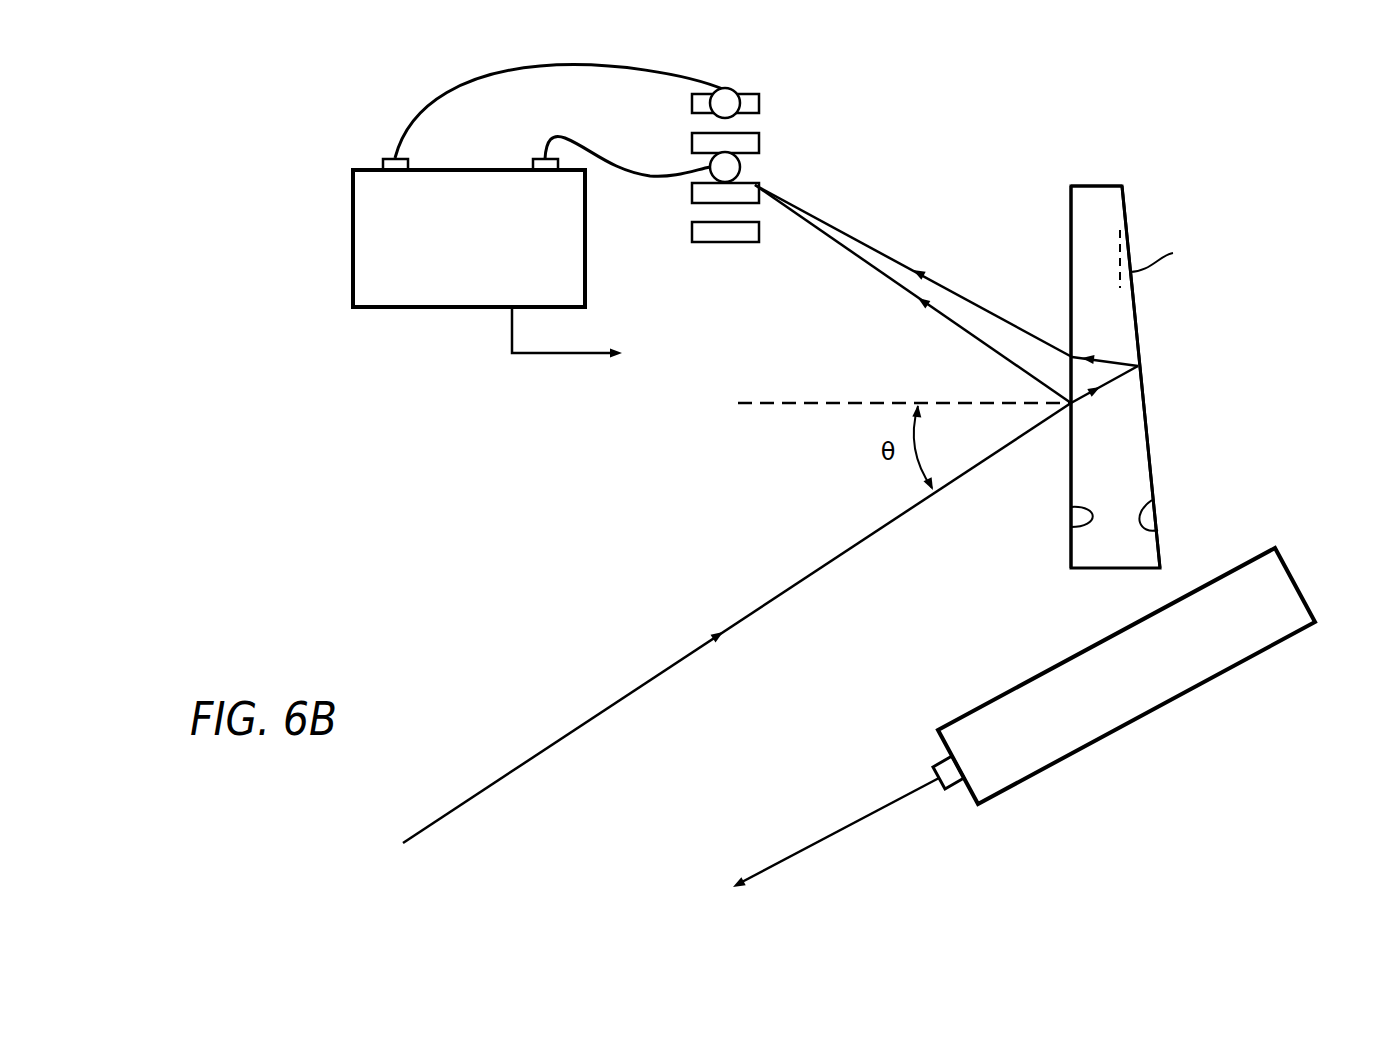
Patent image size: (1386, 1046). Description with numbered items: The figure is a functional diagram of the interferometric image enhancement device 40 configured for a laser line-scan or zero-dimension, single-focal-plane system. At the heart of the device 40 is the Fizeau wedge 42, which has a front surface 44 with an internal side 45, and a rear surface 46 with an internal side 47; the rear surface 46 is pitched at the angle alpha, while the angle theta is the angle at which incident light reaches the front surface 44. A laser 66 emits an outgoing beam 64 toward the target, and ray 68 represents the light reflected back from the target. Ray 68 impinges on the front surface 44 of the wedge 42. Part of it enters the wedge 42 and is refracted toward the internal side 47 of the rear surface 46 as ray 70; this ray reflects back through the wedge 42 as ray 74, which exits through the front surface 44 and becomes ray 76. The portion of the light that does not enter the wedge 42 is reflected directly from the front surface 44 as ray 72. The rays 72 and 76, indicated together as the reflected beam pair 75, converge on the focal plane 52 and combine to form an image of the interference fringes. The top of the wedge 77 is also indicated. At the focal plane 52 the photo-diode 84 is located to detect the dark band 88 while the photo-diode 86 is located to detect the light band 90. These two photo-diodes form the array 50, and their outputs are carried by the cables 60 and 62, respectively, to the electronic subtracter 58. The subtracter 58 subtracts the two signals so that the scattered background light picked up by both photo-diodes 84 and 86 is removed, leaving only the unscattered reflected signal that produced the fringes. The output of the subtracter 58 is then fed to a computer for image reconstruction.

The interferometric image enhancement device 40 is at (658, 487).
The Fizeau wedge 42 is at (1119, 364).
The front surface 44 is at (1071, 467).
The internal side of the front surface 45 is at (1071, 525).
The rear surface 46 is at (1152, 468).
The internal side of the rear surface 47 is at (1158, 530).
The array 50 is at (736, 160).
The focal plane 52 is at (717, 242).
The electronic subtracter 58 is at (435, 307).
The cable 60 is at (503, 73).
The cable 62 is at (557, 135).
The outgoing laser beam 64 is at (888, 800).
The laser 66 is at (1158, 707).
The ray 68 is at (645, 684).
The ray 70 is at (1090, 398).
The ray 72 is at (950, 323).
The ray 74 is at (1137, 352).
The reflected beam pair 75 is at (913, 294).
The ray 76 is at (890, 262).
The top of wedge 77 is at (1100, 186).
The photo-diode 84 is at (728, 90).
The photo-diode 86 is at (740, 168).
The dark band 88 is at (690, 103).
The light band 90 is at (767, 123).